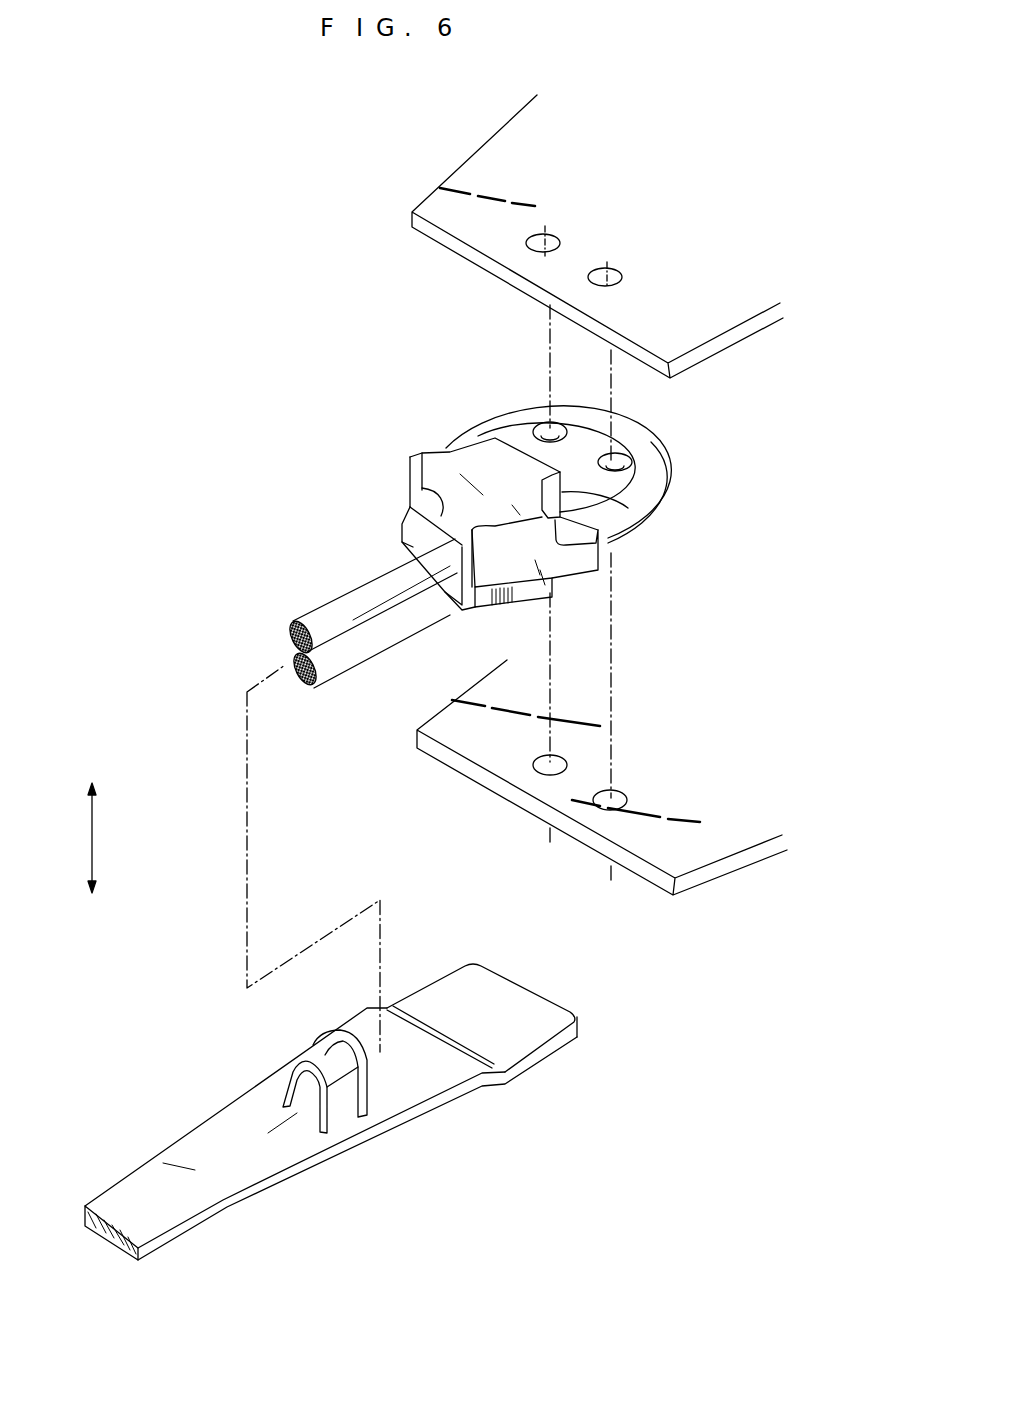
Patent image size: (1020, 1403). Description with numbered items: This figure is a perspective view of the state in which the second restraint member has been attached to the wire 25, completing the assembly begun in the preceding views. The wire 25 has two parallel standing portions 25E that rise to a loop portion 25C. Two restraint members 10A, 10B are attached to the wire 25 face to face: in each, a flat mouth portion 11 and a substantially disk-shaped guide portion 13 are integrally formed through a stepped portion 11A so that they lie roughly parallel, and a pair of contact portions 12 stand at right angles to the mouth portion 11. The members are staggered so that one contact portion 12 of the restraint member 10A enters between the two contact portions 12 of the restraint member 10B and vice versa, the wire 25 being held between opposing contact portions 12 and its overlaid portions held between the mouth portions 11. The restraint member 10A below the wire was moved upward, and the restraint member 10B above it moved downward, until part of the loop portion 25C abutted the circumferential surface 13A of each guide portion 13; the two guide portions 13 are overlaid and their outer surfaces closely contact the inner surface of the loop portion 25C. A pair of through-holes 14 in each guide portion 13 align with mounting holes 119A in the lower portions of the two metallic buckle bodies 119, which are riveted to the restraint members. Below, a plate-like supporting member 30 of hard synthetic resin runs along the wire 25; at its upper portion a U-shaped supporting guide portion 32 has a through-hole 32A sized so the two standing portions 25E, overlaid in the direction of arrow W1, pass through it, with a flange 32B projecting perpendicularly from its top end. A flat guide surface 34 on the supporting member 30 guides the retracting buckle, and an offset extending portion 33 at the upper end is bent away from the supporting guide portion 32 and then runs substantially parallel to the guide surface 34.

The restraint member 10A is at (528, 608).
The restraint member 10B is at (440, 470).
The mouth portion 11 is at (420, 490).
The stepped portion 11A is at (623, 535).
The contact portion 12 is at (560, 580).
The guide portion 13 is at (593, 436).
The circumferential surface 13A is at (648, 513).
The through-hole 14 is at (540, 425).
The wire 25 is at (290, 618).
The loop portion 25C is at (670, 462).
The standing portion 25E is at (345, 614).
The supporting member 30 is at (373, 1119).
The supporting guide portion 32 is at (337, 1075).
The through-hole 32A is at (300, 1082).
The flange 32B is at (373, 1078).
The extending portion 33 is at (552, 1037).
The guide surface 34 is at (223, 1202).
The buckle body 119 is at (737, 337).
The mounting hole 119A is at (558, 241).
The arrow W1 is at (95, 840).